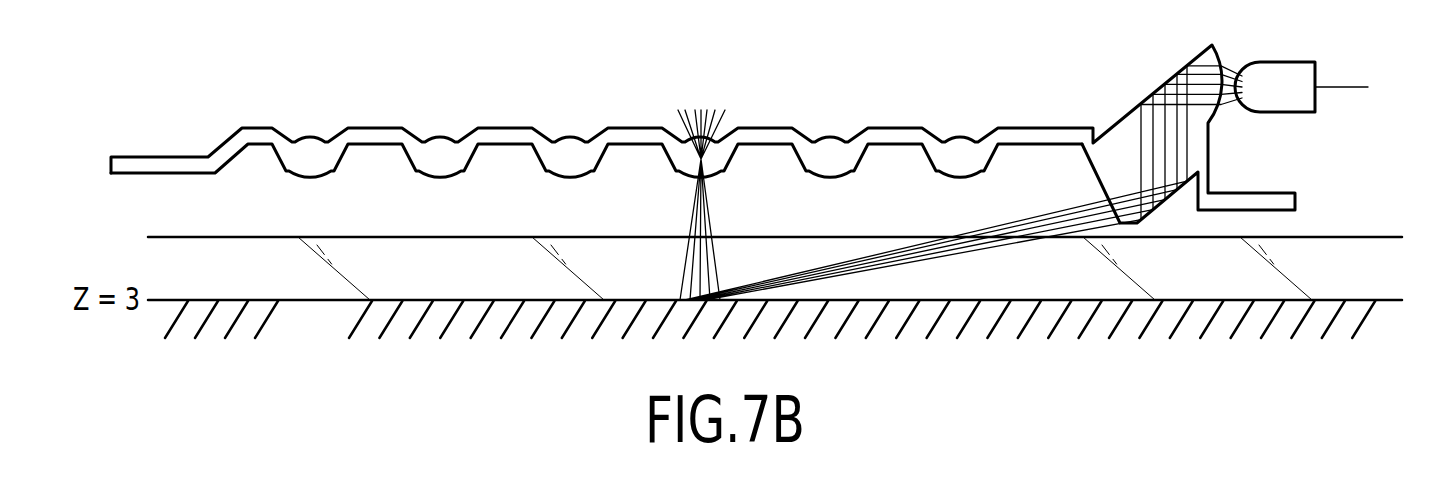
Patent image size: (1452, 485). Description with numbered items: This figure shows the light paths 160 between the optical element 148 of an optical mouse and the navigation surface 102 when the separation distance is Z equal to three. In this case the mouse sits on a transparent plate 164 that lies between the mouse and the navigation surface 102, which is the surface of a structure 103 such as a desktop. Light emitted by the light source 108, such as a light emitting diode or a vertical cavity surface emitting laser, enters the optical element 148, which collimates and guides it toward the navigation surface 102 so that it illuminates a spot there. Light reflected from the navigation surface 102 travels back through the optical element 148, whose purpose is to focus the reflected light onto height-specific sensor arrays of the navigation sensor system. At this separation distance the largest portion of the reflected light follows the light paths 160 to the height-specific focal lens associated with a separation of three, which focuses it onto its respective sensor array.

The optical element 148 is at (218, 36).
The light source 108 is at (1285, 60).
The light paths 160 is at (992, 220).
The navigation surface 102 is at (237, 290).
The transparent plate 164 is at (438, 282).
The structure 103 is at (333, 342).